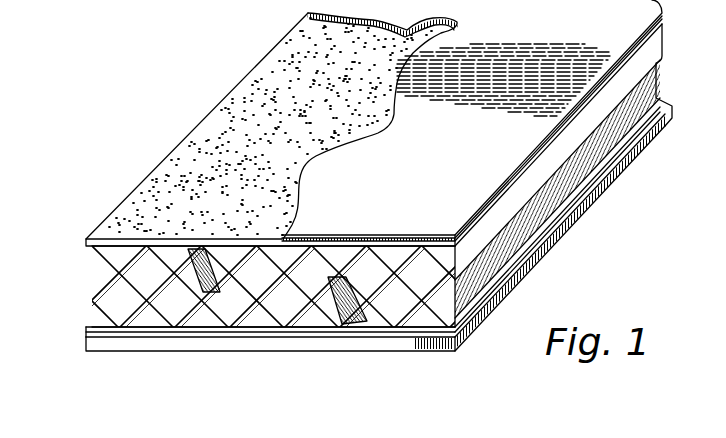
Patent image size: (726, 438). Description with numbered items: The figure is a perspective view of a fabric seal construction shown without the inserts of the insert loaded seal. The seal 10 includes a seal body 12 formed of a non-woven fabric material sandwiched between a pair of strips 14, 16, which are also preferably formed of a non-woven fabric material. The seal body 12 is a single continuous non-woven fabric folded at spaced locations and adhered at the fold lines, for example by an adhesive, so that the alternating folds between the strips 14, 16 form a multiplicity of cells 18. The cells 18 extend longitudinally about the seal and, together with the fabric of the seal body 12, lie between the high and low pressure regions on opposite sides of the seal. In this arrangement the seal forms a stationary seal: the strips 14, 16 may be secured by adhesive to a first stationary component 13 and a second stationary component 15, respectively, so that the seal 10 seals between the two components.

The seal 10 is at (143, 122).
The seal body 12 is at (102, 290).
The first stationary component 13 is at (425, 207).
The strip 14 is at (159, 220).
The second stationary component 15 is at (376, 344).
The strip 16 is at (115, 352).
The cells 18 is at (230, 297).